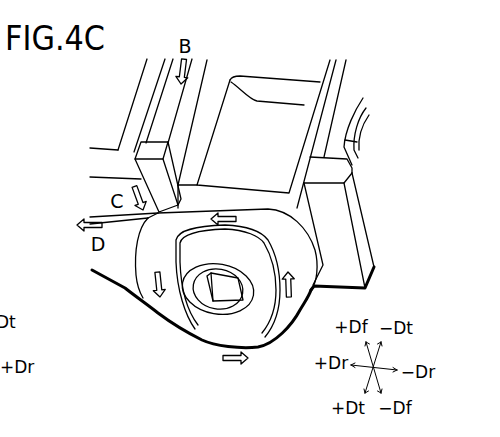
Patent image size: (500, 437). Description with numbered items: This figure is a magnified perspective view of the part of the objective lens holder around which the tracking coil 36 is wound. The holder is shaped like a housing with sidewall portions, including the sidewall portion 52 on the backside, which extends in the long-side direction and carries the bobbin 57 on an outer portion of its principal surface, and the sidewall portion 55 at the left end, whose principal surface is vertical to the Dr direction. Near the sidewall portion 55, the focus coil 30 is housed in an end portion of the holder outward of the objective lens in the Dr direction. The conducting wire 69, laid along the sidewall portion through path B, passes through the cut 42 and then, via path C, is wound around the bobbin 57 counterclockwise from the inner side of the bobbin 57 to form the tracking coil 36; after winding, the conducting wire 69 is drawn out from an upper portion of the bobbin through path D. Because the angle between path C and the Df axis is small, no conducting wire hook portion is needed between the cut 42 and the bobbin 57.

The focus coil 30 is at (326, 73).
The cut 42 is at (135, 159).
The sidewall portion 55 is at (354, 94).
The conducting wire 69 is at (136, 178).
The sidewall portion 52 is at (107, 260).
The tracking coil 36 is at (153, 320).
The bobbin 57 is at (200, 329).